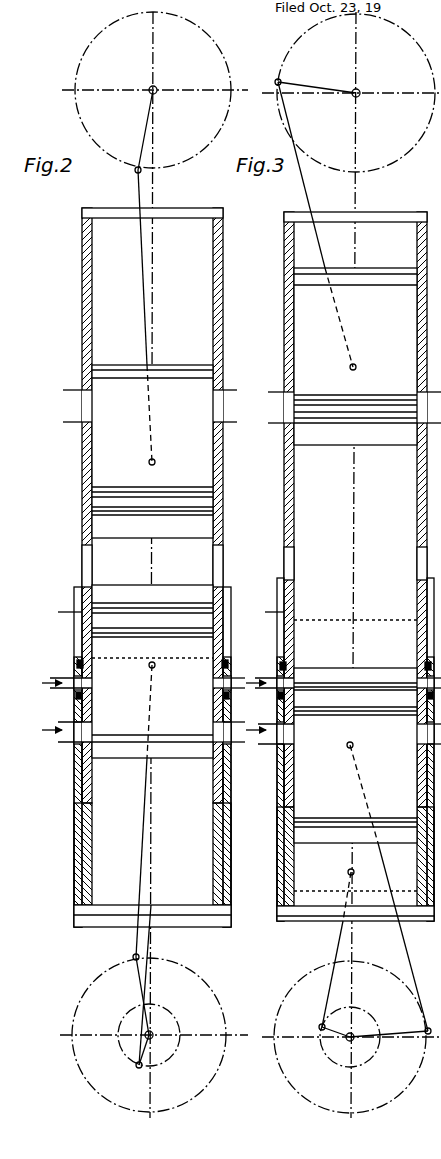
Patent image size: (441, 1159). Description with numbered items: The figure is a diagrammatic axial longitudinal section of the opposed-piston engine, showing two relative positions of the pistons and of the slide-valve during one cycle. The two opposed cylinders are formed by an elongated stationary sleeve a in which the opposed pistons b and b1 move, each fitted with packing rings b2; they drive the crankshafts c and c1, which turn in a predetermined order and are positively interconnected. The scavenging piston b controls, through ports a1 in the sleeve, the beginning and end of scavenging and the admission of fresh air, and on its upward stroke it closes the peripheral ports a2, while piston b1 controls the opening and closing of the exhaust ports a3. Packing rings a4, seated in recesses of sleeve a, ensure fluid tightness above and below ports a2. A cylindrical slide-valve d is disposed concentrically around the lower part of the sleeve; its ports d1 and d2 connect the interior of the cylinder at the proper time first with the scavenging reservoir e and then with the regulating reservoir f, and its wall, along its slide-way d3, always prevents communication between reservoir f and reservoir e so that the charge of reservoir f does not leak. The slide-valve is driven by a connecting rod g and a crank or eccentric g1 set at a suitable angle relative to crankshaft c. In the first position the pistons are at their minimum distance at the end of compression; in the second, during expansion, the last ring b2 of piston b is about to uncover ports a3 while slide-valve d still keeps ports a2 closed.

In FIG. 2, the stationary sleeve a is at (82, 470).
In FIG. 3, the stationary sleeve a is at (427, 488).
In FIG. 2, the ports a1 is at (92, 727).
In FIG. 3, the ports a1 is at (294, 733).
In FIG. 2, the ports a2 is at (92, 683).
In FIG. 3, the ports a2 is at (294, 682).
In FIG. 2, the exhaust ports a3 is at (90, 407).
In FIG. 3, the exhaust ports a3 is at (292, 395).
In FIG. 2, the packing rings a4 is at (90, 664).
In FIG. 3, the packing rings a4 is at (290, 665).
In FIG. 2, the piston b is at (165, 595).
In FIG. 3, the piston b is at (355, 755).
In FIG. 2, the piston b1 is at (152, 451).
In FIG. 3, the piston b1 is at (355, 356).
In FIG. 2, the packing rings b2 is at (162, 508).
In FIG. 3, the packing rings b2 is at (371, 414).
In FIG. 2, the crankshaft c is at (138, 985).
In FIG. 3, the crankshaft c is at (400, 1033).
In FIG. 2, the crankshaft c1 is at (141, 134).
In FIG. 3, the crankshaft c1 is at (308, 84).
In FIG. 2, the slide-valve d is at (74, 679).
In FIG. 3, the slide-valve d is at (277, 635).
In FIG. 2, the port d1 is at (74, 780).
In FIG. 3, the port d1 is at (277, 762).
In FIG. 2, the port d2 is at (74, 700).
In FIG. 3, the port d2 is at (277, 660).
In FIG. 2, the slide-way d3 is at (62, 610).
In FIG. 3, the slide-way d3 is at (266, 606).
In FIG. 2, the scavenging reservoir e is at (45, 730).
In FIG. 3, the scavenging reservoir e is at (250, 730).
In FIG. 2, the regulating reservoir f is at (45, 685).
In FIG. 3, the regulating reservoir f is at (250, 685).
In FIG. 2, the connecting rod g is at (151, 945).
In FIG. 3, the connecting rod g is at (336, 939).
In FIG. 2, the crank or eccentric g1 is at (146, 1053).
In FIG. 3, the crank or eccentric g1 is at (338, 1036).